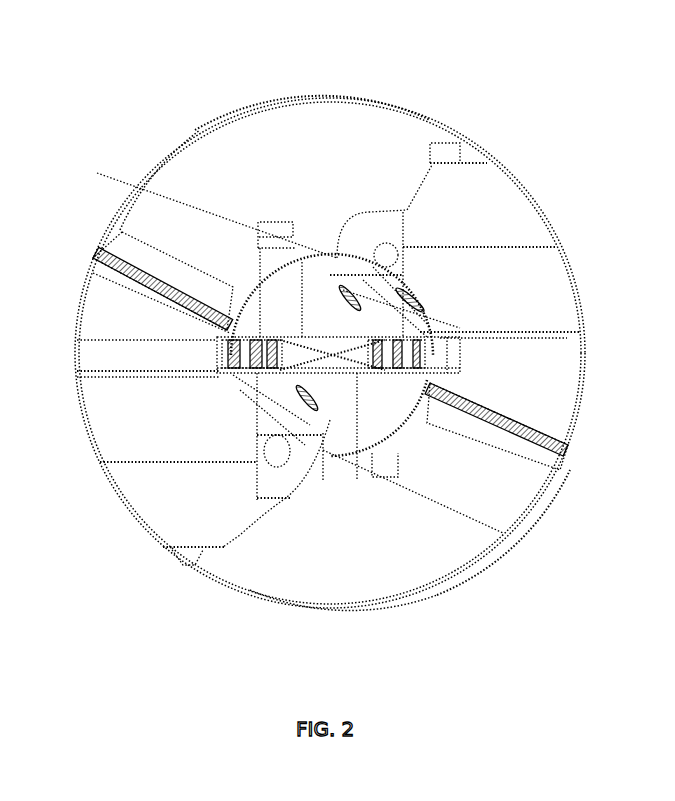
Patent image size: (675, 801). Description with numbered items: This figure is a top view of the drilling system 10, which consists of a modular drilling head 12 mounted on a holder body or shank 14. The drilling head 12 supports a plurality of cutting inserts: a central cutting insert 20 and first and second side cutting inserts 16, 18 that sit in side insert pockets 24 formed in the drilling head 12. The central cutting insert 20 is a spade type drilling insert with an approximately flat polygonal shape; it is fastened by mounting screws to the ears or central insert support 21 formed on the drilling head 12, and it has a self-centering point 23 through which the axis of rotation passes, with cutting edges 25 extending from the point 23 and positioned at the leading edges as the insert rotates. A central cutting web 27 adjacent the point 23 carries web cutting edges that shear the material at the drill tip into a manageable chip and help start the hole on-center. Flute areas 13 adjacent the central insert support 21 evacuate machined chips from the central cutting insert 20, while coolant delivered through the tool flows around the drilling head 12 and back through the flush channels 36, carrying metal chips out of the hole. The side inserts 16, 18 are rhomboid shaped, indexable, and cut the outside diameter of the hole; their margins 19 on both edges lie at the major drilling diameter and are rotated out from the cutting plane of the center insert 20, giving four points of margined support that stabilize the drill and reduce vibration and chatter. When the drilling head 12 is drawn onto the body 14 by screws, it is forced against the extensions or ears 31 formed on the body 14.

The drilling system 10 is at (100, 92).
The drilling head 12 is at (532, 508).
The flute areas 13 is at (365, 325).
The holder body or shank 14 is at (323, 88).
The first side cutting insert 16 is at (116, 240).
The second side cutting insert 18 is at (516, 446).
The margins 19 is at (118, 253).
The central cutting insert 20 is at (268, 338).
The central insert support 21 is at (358, 398).
The self-centering point 23 is at (333, 365).
The side insert pockets 24 is at (173, 253).
The cutting edges 25 is at (418, 338).
The central cutting web 27 is at (335, 335).
The extensions or ears 31 is at (360, 125).
The flush channels 36 is at (510, 216).